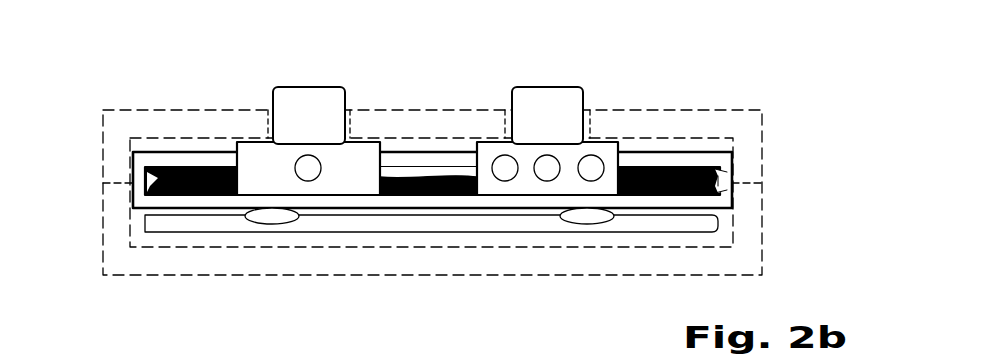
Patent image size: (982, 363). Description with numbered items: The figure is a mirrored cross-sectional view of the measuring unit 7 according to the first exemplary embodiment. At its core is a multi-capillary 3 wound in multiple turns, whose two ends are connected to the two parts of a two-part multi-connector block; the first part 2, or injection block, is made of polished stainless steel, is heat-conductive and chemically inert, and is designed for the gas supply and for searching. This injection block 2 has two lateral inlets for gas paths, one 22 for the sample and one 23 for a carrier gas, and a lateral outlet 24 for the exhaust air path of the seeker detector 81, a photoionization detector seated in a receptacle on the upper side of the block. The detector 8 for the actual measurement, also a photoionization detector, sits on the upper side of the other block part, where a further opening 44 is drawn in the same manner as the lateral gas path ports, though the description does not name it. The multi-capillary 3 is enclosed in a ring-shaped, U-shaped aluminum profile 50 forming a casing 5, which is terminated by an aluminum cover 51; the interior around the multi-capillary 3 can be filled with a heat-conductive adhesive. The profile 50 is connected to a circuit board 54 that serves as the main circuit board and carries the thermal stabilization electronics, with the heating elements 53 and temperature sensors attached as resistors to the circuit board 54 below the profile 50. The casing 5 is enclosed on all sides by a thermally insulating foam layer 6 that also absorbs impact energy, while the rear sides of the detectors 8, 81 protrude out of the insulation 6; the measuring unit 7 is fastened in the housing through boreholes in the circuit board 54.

The measuring unit 7 is at (68, 83).
The thermally insulating layer 6 is at (112, 153).
The casing 5 is at (505, 173).
The profile 50 is at (732, 208).
The cover 51 is at (491, 162).
The multi-capillary 3 is at (433, 178).
The first part of the multi-connector block 2 is at (372, 146).
The detector 8 is at (308, 100).
The seeker detector 81 is at (557, 105).
The hole 44 is at (308, 170).
The lateral outlet 24 is at (505, 170).
The lateral inlet for carrier gas 23 is at (547, 170).
The lateral inlet for sample 22 is at (591, 168).
The circuit board 54 is at (638, 223).
The heating elements 53 is at (273, 223).